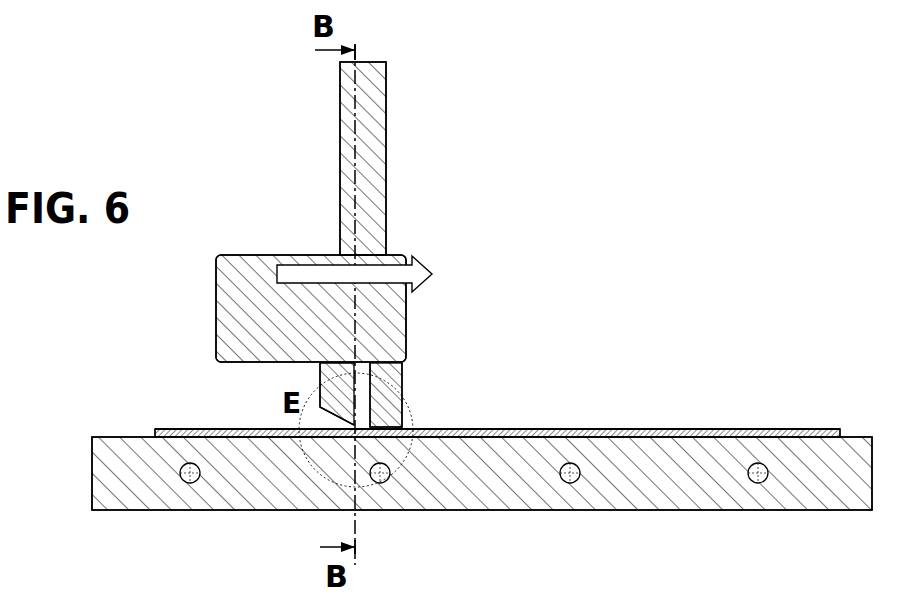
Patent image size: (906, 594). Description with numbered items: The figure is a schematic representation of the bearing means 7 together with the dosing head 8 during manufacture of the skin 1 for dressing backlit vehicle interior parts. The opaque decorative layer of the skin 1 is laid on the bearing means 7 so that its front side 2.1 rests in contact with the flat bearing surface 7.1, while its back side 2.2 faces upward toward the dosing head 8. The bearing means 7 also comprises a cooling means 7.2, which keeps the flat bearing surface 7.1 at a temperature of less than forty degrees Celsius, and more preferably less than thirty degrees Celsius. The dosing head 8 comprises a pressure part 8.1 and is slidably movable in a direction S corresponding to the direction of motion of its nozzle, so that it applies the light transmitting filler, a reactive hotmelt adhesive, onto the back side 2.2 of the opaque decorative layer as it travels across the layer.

The skin 1 is at (505, 391).
The front side 2.1 is at (815, 435).
The back side 2.2 is at (750, 430).
The bearing means 7 is at (443, 479).
The flat bearing surface 7.1 is at (127, 436).
The cooling means 7.2 is at (750, 475).
The dosing head 8 is at (335, 244).
The pressure part 8.1 is at (356, 427).